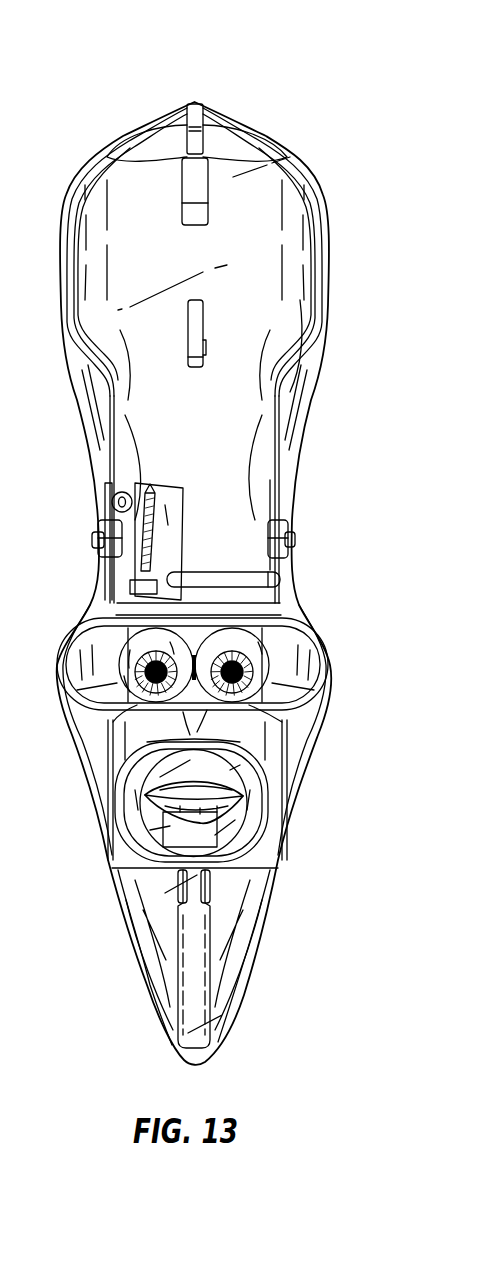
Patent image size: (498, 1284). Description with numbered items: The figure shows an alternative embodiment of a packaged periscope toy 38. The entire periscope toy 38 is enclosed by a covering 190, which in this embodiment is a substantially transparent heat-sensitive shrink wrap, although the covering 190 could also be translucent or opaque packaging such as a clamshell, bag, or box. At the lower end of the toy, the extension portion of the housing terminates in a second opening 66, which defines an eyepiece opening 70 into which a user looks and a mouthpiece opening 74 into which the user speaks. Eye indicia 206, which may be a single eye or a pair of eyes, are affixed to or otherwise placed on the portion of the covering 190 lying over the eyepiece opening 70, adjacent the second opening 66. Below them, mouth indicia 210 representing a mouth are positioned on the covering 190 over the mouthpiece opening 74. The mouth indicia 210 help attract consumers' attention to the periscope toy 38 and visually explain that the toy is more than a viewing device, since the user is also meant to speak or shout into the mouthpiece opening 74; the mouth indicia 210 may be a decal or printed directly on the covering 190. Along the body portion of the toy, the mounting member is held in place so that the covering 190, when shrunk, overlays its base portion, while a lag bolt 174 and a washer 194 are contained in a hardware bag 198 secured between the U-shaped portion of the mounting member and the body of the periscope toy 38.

The periscope toy 38 is at (197, 539).
The covering 190 is at (318, 385).
The washer 194 is at (117, 492).
The lag bolt 174 is at (155, 582).
The hardware bag 198 is at (155, 607).
The eye indicia 206 is at (262, 645).
The second opening 66 is at (293, 653).
The eyepiece opening 70 is at (287, 690).
The mouth indicia 210 is at (227, 778).
The mouthpiece opening 74 is at (247, 800).